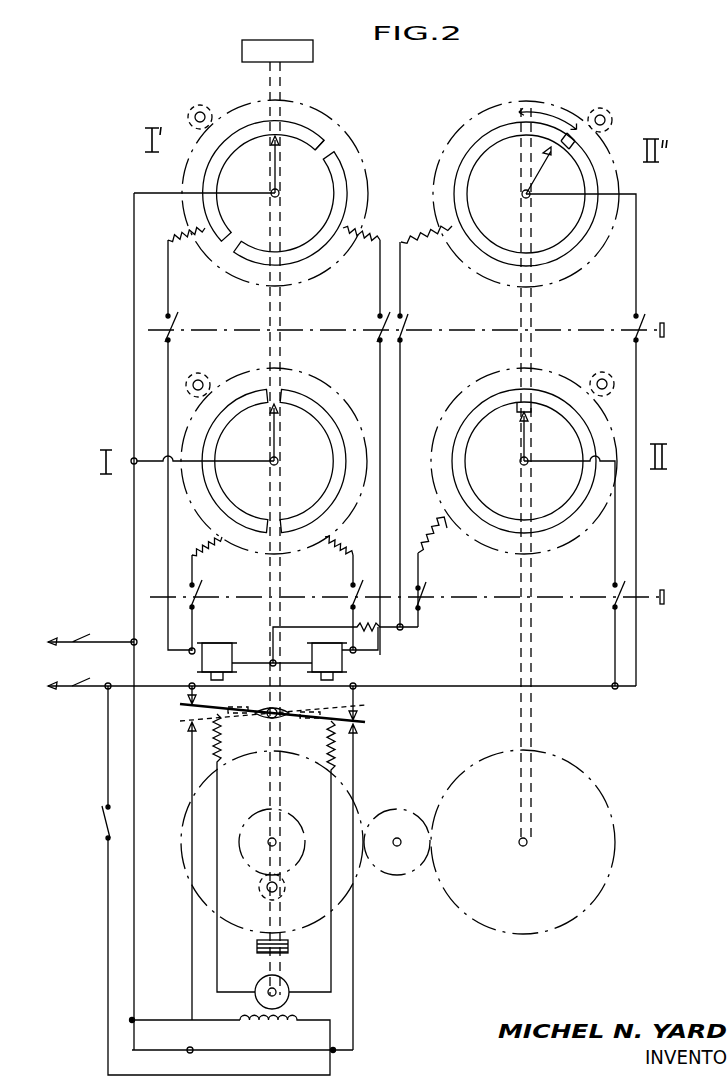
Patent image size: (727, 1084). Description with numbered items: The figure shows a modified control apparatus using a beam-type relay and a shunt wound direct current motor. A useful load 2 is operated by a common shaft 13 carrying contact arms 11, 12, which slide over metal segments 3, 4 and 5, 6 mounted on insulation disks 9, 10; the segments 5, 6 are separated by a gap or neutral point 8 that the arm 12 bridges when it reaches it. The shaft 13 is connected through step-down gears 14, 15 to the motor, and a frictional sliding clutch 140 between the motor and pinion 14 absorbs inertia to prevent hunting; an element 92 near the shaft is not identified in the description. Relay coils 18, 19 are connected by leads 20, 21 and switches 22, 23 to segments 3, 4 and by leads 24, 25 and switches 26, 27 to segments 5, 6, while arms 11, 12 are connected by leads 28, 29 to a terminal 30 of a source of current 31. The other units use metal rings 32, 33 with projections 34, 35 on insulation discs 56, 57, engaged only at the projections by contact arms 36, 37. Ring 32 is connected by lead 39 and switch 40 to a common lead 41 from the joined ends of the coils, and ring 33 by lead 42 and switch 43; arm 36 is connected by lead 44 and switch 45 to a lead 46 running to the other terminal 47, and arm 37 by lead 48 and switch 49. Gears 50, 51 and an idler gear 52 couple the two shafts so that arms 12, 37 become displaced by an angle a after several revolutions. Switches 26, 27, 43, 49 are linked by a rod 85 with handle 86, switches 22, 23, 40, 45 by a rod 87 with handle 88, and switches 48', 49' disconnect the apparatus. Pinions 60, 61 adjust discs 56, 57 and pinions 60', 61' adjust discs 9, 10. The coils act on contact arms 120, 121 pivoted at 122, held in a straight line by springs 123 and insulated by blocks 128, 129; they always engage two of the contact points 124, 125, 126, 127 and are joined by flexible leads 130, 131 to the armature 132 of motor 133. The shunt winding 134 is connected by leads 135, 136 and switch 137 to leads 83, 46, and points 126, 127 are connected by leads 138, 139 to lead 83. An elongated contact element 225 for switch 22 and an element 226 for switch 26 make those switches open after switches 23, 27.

The useful load 2 is at (313, 52).
The metal segment 3 is at (238, 515).
The metal segment 4 is at (318, 510).
The metal segment 5 is at (220, 219).
The metal segment 6 is at (320, 228).
The gap or neutral point 8 is at (327, 150).
The insulation disk 9 is at (320, 387).
The insulation disk 10 is at (320, 128).
The contact arm 11 is at (279, 434).
The contact arm 12 is at (280, 172).
The common shaft 13 is at (280, 316).
The step-down gear 14 is at (284, 887).
The step-down gear 15 is at (288, 818).
The relay coil 18 is at (213, 643).
The relay coil 19 is at (322, 643).
The lead 20 is at (197, 569).
The lead 21 is at (348, 578).
The switch 22 is at (198, 592).
The switch 23 is at (348, 594).
The lead 24 is at (169, 288).
The lead 25 is at (380, 294).
The switch 26 is at (179, 323).
The switch 27 is at (378, 323).
The lead 28 is at (134, 351).
The lead 29 is at (146, 472).
The terminal 30 is at (51, 638).
The source of current 31 is at (60, 652).
The metal ring 32 is at (468, 490).
The metal ring 33 is at (480, 238).
The projection 34 is at (515, 414).
The projection 35 is at (572, 154).
The contact arm 36 is at (530, 434).
The contact arm 37 is at (522, 178).
The lead 39 is at (418, 563).
The switch 40 is at (424, 595).
The common lead 41 is at (295, 634).
The lead 42 is at (400, 292).
The switch 43 is at (406, 327).
The lead 44 is at (612, 641).
The switch 45 is at (628, 582).
The lead 46 is at (440, 686).
The terminal 47 is at (50, 694).
The lead 48 is at (598, 440).
The switch 49 is at (652, 319).
The gear 50 is at (353, 808).
The gear 51 is at (610, 830).
The idler gear 52 is at (397, 876).
The insulation disc 56 is at (472, 388).
The insulation disc 57 is at (472, 126).
The pinion 60 is at (608, 369).
The pinion 61 is at (612, 107).
The pinion 60' is at (208, 369).
The pinion 61' is at (203, 102).
The lead 83 is at (134, 788).
The common rod 85 is at (570, 333).
The handle 86 is at (666, 330).
The common rod 87 is at (556, 593).
The handle 88 is at (666, 596).
The shaft end 92 is at (270, 918).
The contact arm 120 is at (186, 706).
The contact arm 121 is at (372, 719).
The pivot 122 is at (276, 710).
The spring 123 is at (280, 720).
The contact point 124 is at (191, 698).
The contact point 125 is at (358, 714).
The contact point 126 is at (188, 733).
The contact point 127 is at (358, 727).
The insulation block 128 is at (232, 710).
The insulation block 129 is at (314, 714).
The flexible lead 130 is at (217, 743).
The flexible lead 131 is at (339, 755).
The armature 132 is at (286, 984).
The motor 133 is at (242, 1021).
The shunt winding 134 is at (230, 1032).
The lead 135 is at (148, 1018).
The lead 136 is at (108, 1030).
The switch 137 is at (105, 822).
The lead 138 is at (202, 936).
The lead 139 is at (356, 950).
The frictional sliding clutch 140 is at (288, 950).
The elongated contact element 225 is at (192, 585).
The elongated element 226 is at (168, 316).
The angle a is at (548, 115).
The switch 48' is at (92, 625).
The switch 49' is at (81, 701).